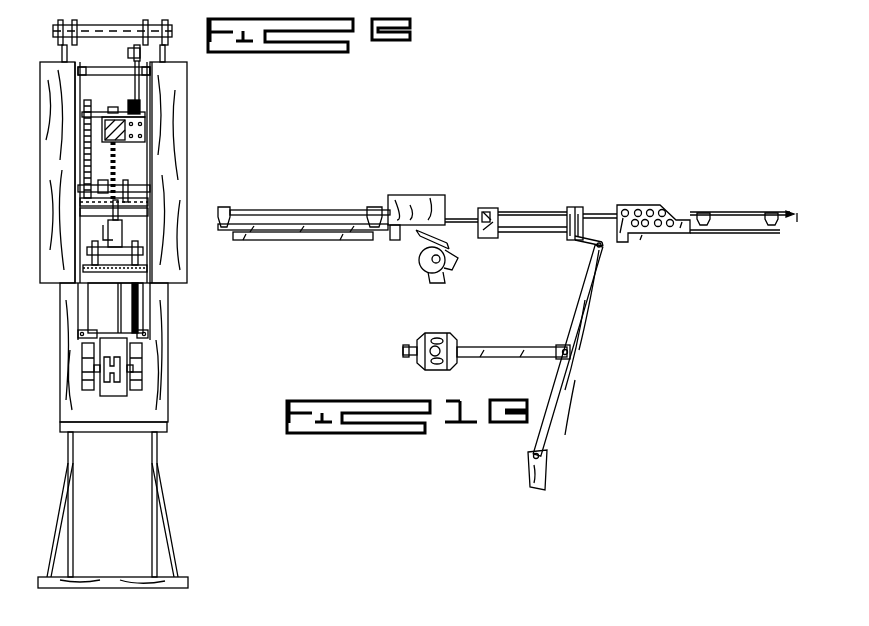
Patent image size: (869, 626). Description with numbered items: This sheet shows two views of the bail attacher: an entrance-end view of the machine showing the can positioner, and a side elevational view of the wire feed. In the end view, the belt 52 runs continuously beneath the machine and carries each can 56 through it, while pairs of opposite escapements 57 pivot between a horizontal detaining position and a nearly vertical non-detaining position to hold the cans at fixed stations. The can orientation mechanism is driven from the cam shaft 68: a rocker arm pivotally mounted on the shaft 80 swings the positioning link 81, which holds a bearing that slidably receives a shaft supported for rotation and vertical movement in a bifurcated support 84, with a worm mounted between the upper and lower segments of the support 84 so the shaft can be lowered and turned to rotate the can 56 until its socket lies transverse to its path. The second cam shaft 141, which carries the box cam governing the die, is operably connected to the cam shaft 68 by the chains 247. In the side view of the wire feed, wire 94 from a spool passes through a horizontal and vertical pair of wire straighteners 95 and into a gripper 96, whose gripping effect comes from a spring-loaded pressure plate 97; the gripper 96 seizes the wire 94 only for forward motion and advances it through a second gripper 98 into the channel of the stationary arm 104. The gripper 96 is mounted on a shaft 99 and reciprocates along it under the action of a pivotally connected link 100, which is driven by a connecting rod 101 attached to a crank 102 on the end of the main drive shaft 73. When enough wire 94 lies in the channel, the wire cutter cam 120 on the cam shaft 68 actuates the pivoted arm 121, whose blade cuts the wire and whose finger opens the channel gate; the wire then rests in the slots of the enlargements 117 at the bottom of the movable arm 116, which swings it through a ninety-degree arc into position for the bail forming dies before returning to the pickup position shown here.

In FIG. 5, the second cam shaft 141 is at (97, 113).
In FIG. 5, the bifurcated support 84 is at (102, 137).
In FIG. 5, the chains 247 is at (83, 160).
In FIG. 5, the shaft 80 is at (134, 185).
In FIG. 5, the positioning link 81 is at (107, 233).
In FIG. 5, the cam shaft 68 is at (134, 213).
In FIG. 13, the cam shaft 68 is at (442, 261).
In FIG. 5, the can 56 is at (118, 305).
In FIG. 5, the escapements 57 is at (90, 335).
In FIG. 5, the belt 52 is at (120, 396).
In FIG. 13, the movable arm 116 is at (271, 210).
In FIG. 13, the enlargements 117 is at (235, 200).
In FIG. 13, the stationary arm 104 is at (262, 231).
In FIG. 13, the pivoted arm 121 is at (425, 241).
In FIG. 13, the wire cutter cam 120 is at (429, 276).
In FIG. 13, the wire 94 is at (459, 218).
In FIG. 13, the spring-loaded pressure plate 97 is at (489, 209).
In FIG. 13, the second gripper 98 is at (514, 190).
In FIG. 13, the shaft 99 is at (538, 232).
In FIG. 13, the gripper 96 is at (576, 210).
In FIG. 13, the wire straighteners 95 is at (663, 183).
In FIG. 13, the link 100 is at (588, 297).
In FIG. 13, the connecting rod 101 is at (491, 343).
In FIG. 13, the crank 102 is at (440, 333).
In FIG. 13, the main drive shaft 73 is at (430, 356).